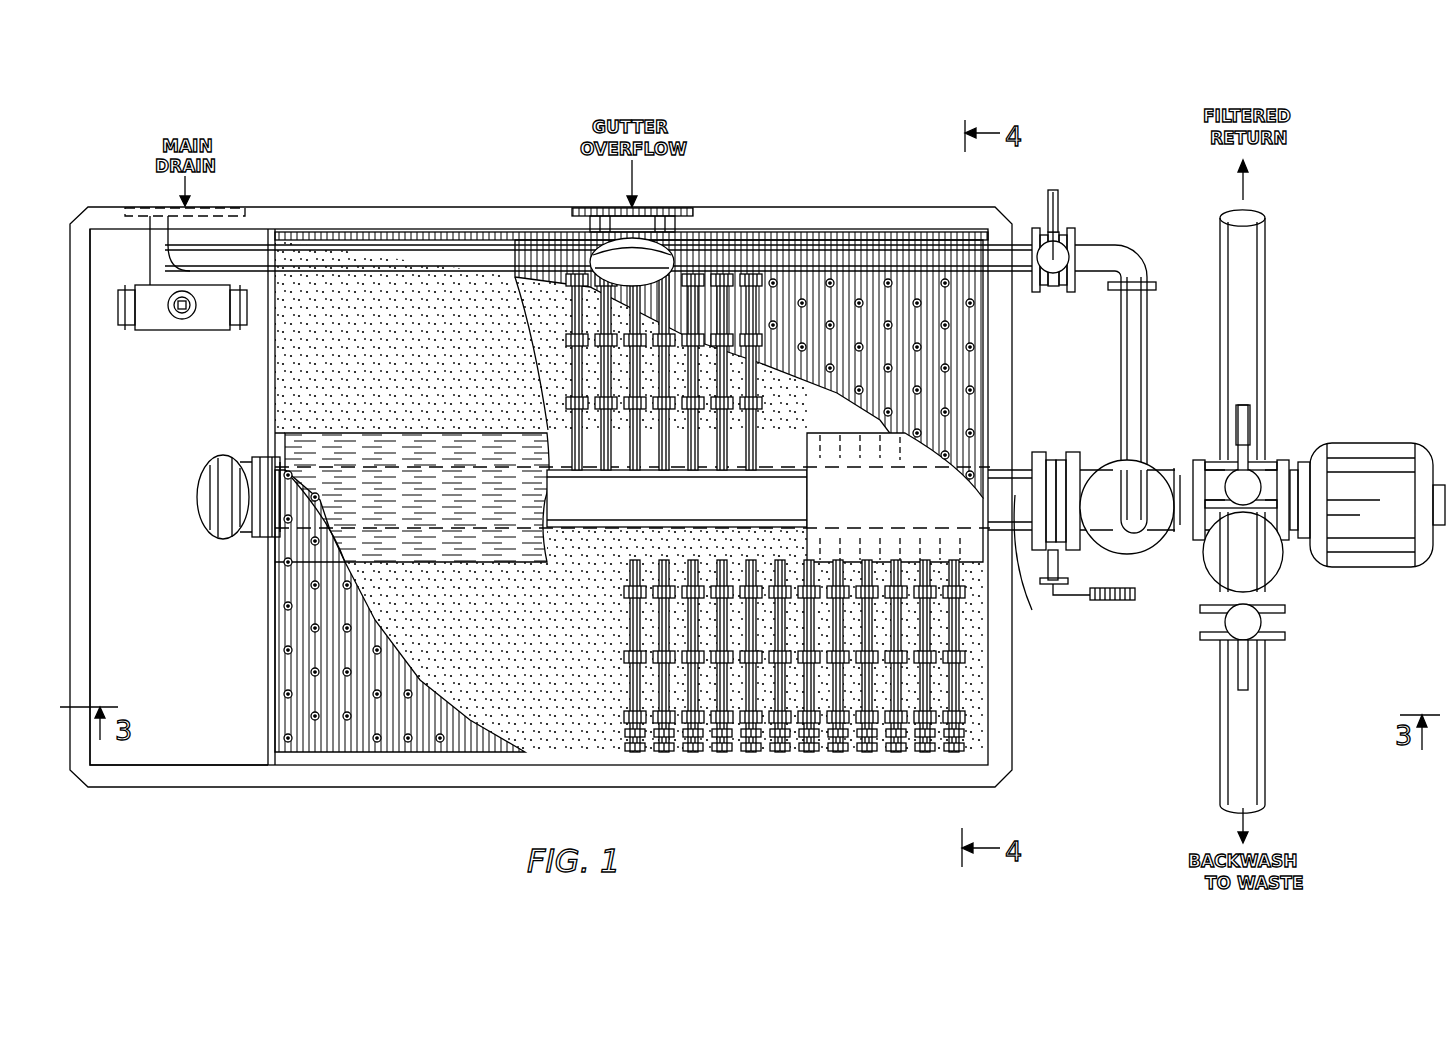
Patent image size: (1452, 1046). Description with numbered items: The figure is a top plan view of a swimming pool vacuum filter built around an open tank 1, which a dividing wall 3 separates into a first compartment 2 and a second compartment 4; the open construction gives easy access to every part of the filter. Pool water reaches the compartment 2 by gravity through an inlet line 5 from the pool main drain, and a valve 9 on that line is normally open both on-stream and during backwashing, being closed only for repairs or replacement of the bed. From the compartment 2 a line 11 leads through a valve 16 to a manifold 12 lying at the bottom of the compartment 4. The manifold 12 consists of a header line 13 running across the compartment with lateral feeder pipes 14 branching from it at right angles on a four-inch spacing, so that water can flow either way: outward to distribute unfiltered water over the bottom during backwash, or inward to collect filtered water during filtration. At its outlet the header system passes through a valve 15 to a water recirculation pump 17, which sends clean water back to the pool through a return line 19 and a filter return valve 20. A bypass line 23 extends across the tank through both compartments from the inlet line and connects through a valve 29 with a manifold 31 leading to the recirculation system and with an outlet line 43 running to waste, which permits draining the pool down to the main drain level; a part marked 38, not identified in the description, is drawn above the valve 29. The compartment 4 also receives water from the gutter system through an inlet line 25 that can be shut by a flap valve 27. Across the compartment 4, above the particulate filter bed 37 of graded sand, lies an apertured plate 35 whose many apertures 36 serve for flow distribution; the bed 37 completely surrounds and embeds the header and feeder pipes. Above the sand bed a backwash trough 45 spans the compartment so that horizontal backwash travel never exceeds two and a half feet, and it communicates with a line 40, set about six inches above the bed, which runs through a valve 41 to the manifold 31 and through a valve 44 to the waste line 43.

The open tank 1 is at (990, 714).
The compartment 2 is at (166, 432).
The dividing wall 3 is at (268, 366).
The compartment 4 is at (400, 278).
The inlet line 5 is at (150, 225).
The valve 9 is at (165, 335).
The line 11 is at (262, 460).
The manifold 12 is at (540, 410).
The header line 13 is at (590, 517).
The lateral feeder pipes 14 is at (580, 320).
The valve 15 is at (1055, 490).
The valve 16 is at (215, 500).
The water recirculation pump 17 is at (1310, 588).
The return line 19 is at (1245, 268).
The filter return valve 20 is at (1265, 475).
The bypass line 23 is at (848, 245).
The inlet line 25 is at (665, 232).
The valve 27 is at (610, 255).
The valve 29 is at (1060, 245).
The manifold 31 is at (1130, 350).
The apertured plate 35 is at (288, 722).
The apertures 36 is at (288, 694).
The particulate filter bed 37 is at (385, 350).
The valve handle 38 is at (1058, 212).
The line 40 is at (1033, 566).
The valve 41 is at (1060, 545).
The outlet line 43 is at (1245, 745).
The valve 44 is at (1220, 628).
The backwash trough 45 is at (470, 540).